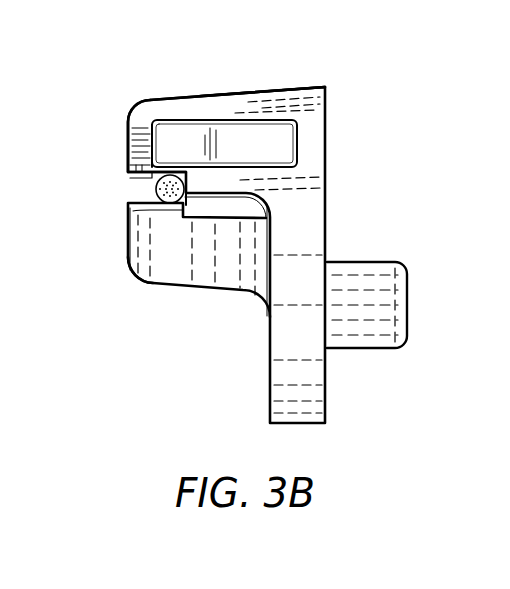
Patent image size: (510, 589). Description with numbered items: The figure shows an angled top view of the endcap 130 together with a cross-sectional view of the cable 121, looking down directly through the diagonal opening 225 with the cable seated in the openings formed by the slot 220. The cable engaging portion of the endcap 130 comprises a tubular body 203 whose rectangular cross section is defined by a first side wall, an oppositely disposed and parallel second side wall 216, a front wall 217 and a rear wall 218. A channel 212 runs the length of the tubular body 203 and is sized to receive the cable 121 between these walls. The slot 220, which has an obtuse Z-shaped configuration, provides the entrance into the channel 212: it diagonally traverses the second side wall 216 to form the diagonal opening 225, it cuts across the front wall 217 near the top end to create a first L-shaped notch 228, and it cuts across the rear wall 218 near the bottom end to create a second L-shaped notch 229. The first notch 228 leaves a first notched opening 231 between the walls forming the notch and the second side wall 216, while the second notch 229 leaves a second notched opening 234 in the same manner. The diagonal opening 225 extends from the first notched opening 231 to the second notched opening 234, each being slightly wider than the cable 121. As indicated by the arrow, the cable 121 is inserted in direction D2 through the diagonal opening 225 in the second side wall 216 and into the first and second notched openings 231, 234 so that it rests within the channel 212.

The endcap 130 is at (283, 88).
The tubular body 203 is at (193, 110).
The rear wall 218 is at (259, 95).
The channel 212 is at (238, 130).
The second notched opening 234 is at (157, 142).
The second side wall 216 is at (128, 146).
The diagonal opening 225 is at (128, 178).
The second L-shaped notch 229 is at (172, 178).
The first L-shaped notch 228 is at (192, 214).
The cable 121 is at (182, 214).
The slot 220 is at (128, 206).
The first notched opening 231 is at (156, 235).
The front wall 217 is at (231, 275).
The insertion direction D2 is at (125, 187).